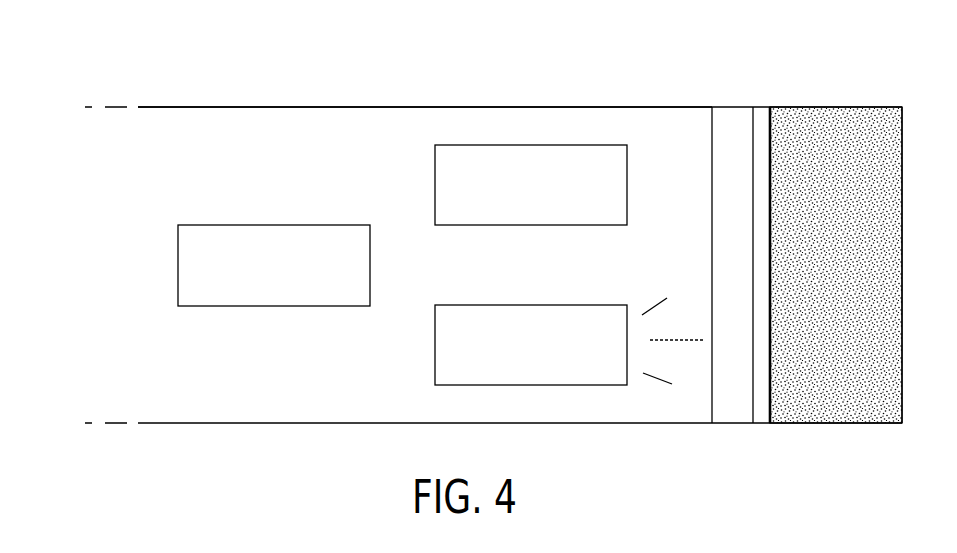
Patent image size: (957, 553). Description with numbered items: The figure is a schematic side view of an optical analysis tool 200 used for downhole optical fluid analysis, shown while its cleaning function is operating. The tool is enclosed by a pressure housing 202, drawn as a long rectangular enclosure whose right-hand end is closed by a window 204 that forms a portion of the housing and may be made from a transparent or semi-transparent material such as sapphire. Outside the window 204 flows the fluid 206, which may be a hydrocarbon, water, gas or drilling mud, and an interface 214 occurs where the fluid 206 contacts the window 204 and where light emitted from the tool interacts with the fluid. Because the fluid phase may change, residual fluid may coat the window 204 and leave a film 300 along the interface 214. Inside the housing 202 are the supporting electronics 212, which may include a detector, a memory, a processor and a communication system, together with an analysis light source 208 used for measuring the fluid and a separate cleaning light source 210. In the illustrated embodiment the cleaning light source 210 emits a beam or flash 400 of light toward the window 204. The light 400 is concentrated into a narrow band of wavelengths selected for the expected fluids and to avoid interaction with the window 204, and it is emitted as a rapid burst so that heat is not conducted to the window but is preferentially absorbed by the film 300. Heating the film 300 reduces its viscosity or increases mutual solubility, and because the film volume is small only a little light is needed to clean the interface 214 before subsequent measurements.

The optical analysis tool 200 is at (343, 78).
The pressure housing 202 is at (476, 107).
The window 204 is at (733, 107).
The fluid 206 is at (838, 149).
The analysis light source 208 is at (523, 225).
The cleaning light source 210 is at (525, 305).
The supporting electronics 212 is at (267, 225).
The interface 214 is at (762, 125).
The film 300 is at (768, 392).
The beam or flash of light 400 is at (640, 292).